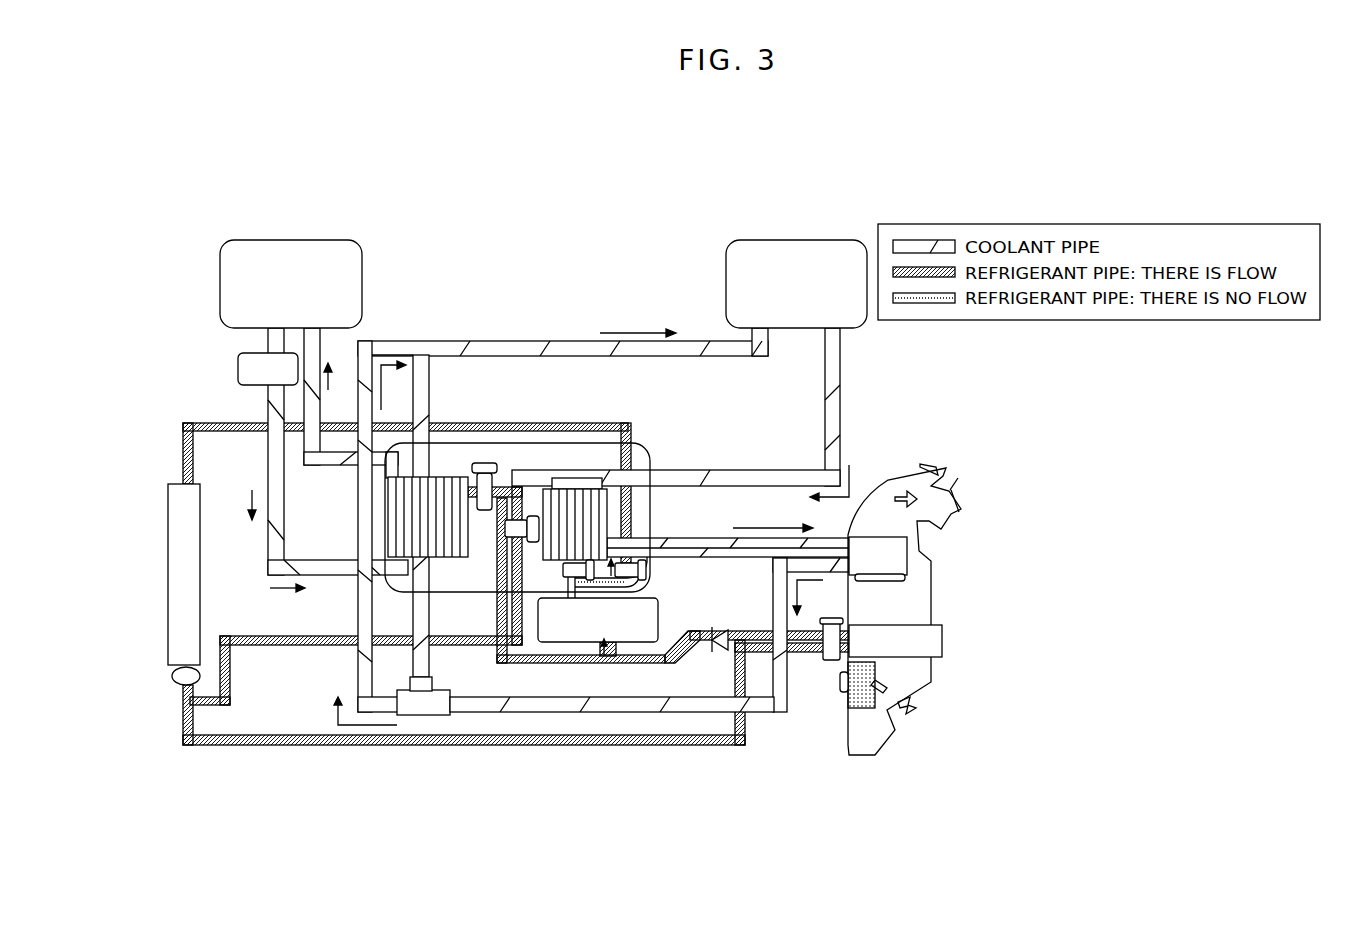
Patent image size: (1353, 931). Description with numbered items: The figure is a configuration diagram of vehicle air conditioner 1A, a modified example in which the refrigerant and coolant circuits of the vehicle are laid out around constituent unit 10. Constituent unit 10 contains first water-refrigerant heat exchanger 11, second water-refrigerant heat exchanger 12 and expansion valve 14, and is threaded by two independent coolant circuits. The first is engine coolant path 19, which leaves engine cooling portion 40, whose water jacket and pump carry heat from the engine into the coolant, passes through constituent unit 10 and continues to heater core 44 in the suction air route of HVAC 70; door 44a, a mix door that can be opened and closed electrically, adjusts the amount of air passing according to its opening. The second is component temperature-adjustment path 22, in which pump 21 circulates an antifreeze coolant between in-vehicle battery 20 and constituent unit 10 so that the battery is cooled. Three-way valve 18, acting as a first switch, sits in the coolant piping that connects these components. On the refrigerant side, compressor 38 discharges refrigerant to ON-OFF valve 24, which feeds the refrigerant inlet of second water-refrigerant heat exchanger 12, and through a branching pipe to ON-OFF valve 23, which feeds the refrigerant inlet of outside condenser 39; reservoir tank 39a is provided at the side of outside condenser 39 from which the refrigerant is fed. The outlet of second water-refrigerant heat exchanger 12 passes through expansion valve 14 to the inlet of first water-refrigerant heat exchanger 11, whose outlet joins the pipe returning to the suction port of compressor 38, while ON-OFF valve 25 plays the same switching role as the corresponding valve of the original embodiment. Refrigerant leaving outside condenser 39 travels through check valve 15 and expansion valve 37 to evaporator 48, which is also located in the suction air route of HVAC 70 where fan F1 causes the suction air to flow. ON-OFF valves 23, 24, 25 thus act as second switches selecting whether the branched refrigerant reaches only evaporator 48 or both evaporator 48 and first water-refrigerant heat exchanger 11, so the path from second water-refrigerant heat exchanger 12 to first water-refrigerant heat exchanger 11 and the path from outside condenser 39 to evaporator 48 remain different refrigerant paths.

The vehicle air conditioner 1A is at (590, 283).
The constituent unit 10 is at (636, 443).
The first water-refrigerant heat exchanger 11 is at (446, 560).
The second water-refrigerant heat exchanger 12 is at (567, 517).
The expansion valve 14 is at (481, 462).
The check valve 15 is at (720, 652).
The three-way valve 18 is at (422, 717).
The engine coolant path 19 is at (447, 340).
The in-vehicle battery 20 is at (220, 280).
The pump 21 is at (238, 367).
The component temperature-adjustment path 22 is at (266, 565).
The ON-OFF valve 23 is at (646, 573).
The ON-OFF valve 24 is at (563, 570).
The ON-OFF valve 25 is at (506, 529).
The expansion valve 37 is at (828, 660).
The compressor 38 is at (660, 617).
The outside condenser 39 is at (168, 641).
The reservoir tank 39a is at (180, 690).
The engine cooling portion 40 is at (726, 280).
The heater core 44 is at (870, 537).
The door 44a is at (885, 581).
The evaporator 48 is at (942, 652).
The HVAC 70 is at (944, 571).
The fan F1 is at (866, 708).